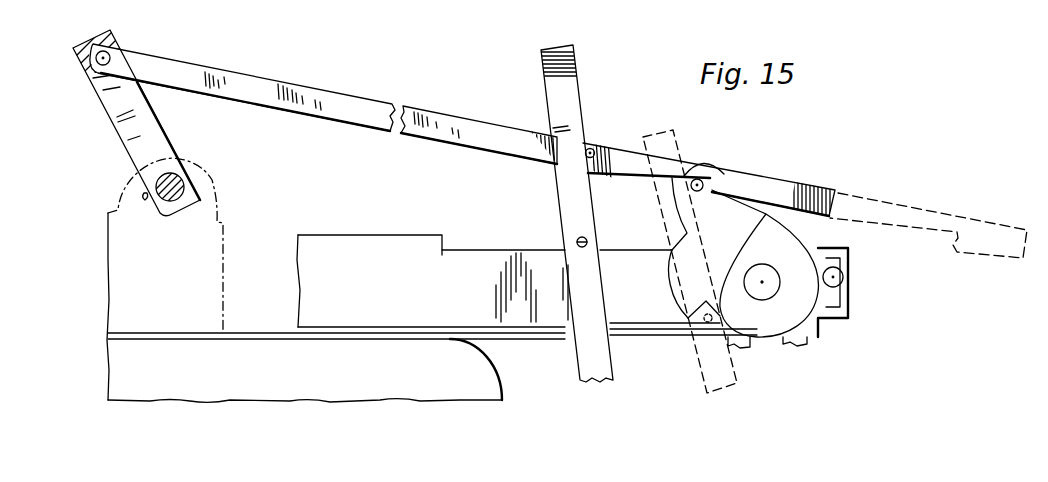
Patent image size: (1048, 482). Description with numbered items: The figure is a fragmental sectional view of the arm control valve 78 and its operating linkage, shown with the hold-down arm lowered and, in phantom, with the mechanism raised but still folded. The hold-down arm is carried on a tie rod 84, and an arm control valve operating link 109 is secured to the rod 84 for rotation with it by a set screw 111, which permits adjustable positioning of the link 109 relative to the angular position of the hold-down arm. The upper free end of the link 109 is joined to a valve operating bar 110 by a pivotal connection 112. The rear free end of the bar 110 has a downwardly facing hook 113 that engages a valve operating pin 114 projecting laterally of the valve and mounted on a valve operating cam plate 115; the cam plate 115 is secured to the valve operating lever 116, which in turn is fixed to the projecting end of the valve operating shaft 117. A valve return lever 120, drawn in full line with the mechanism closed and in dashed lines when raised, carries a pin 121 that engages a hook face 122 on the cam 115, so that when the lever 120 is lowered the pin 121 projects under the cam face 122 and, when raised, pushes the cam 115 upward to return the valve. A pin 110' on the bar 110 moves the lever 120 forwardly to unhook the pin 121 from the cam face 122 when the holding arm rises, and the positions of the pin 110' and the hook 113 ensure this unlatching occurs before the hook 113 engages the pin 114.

The arm control valve 78 is at (806, 220).
The tie rod 84 is at (246, 159).
The arm control valve operating link 109 is at (130, 110).
The valve operating bar 110 is at (558, 151).
The pin 110' is at (709, 157).
The set screw 111 is at (147, 202).
The pivotal connection 112 is at (180, 47).
The hook 113 is at (702, 192).
The valve operating pin 114 is at (688, 186).
The valve operating cam plate 115 is at (736, 265).
The valve operating lever 116 is at (789, 262).
The valve operating shaft 117 is at (763, 285).
The valve return lever 120 is at (568, 190).
The pin 121 is at (589, 239).
The hook face 122 is at (690, 306).